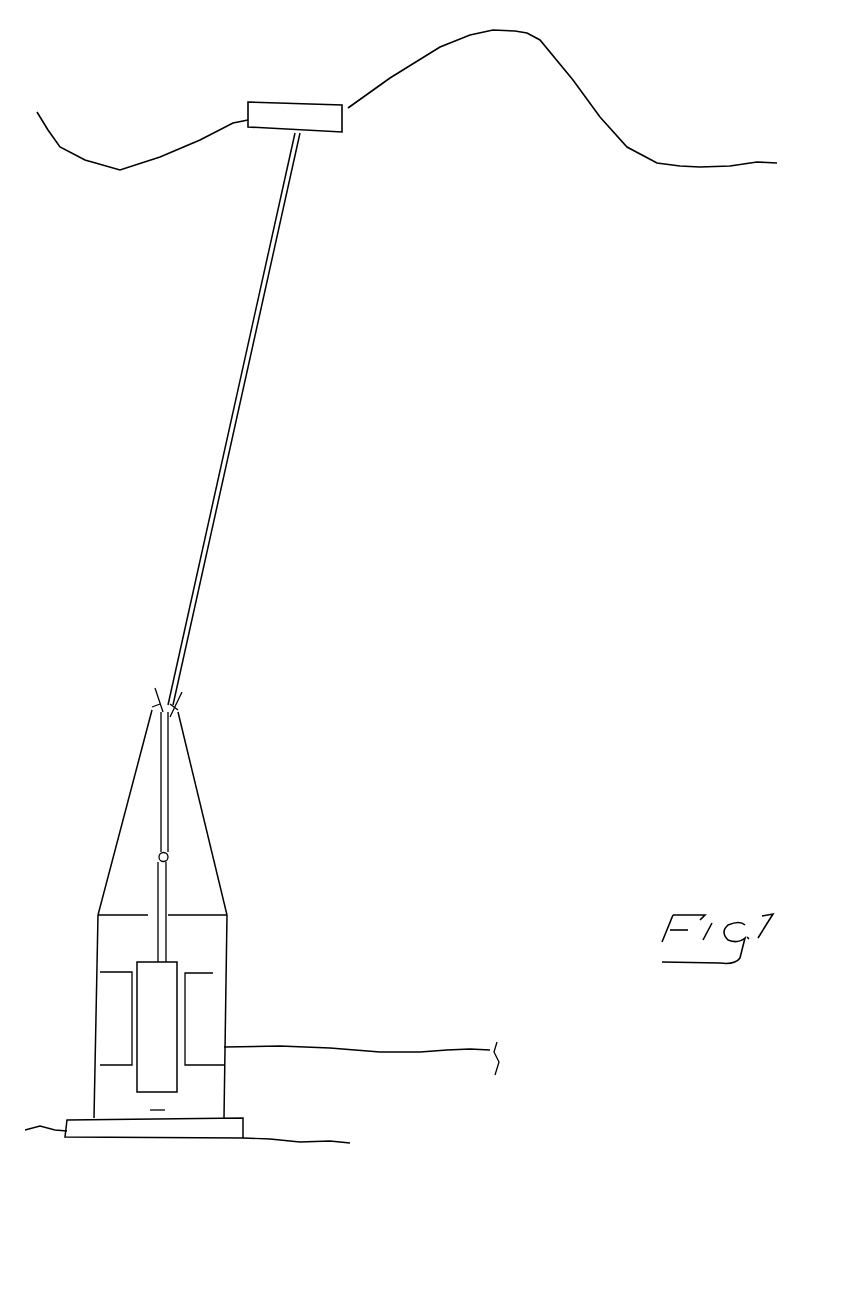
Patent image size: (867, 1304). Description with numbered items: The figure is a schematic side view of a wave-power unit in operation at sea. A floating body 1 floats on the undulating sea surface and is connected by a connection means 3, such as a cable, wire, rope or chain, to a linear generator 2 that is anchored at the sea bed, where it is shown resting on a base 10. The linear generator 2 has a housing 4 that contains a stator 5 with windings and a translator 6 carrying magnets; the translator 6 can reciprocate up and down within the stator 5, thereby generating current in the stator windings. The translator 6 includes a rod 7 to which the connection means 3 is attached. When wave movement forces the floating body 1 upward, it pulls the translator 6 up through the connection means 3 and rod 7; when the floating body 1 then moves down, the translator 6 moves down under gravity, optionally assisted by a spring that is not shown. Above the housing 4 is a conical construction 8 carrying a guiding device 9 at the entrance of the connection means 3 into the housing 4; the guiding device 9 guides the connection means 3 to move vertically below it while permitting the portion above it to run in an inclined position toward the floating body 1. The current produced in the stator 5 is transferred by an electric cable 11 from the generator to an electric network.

The floating body 1 is at (302, 102).
The linear generator 2 is at (318, 998).
The connection means 3 is at (243, 392).
The housing 4 is at (228, 943).
The stator 5 is at (215, 1017).
The translator 6 is at (167, 1068).
The rod 7 is at (165, 890).
The conical construction 8 is at (198, 783).
The guiding device 9 is at (185, 695).
The base plate 10 is at (223, 1138).
The electric cable 11 is at (447, 1050).